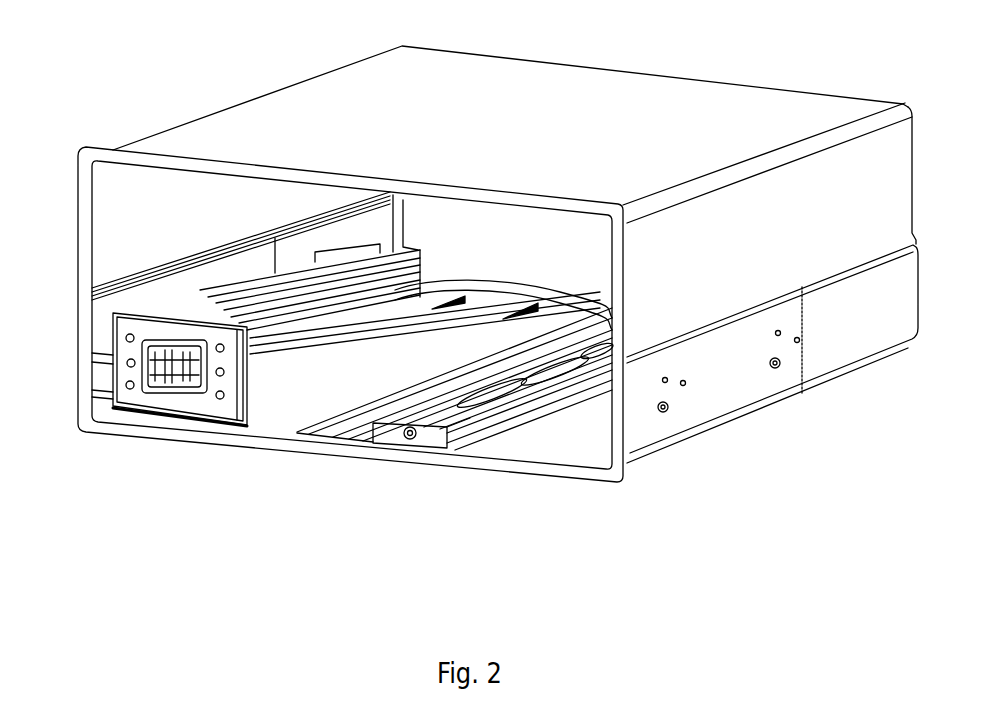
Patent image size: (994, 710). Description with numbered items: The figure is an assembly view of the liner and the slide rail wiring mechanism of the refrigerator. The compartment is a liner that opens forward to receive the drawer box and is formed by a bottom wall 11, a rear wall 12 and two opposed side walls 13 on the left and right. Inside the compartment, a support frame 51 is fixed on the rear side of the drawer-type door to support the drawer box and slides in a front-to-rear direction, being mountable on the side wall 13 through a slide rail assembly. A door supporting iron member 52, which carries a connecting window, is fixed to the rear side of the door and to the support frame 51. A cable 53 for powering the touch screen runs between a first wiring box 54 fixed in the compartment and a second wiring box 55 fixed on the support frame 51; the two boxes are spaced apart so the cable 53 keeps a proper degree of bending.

The bottom wall 11 is at (555, 452).
The rear wall 12 is at (563, 240).
The side wall 13 is at (853, 345).
The support frame 51 is at (197, 308).
The door supporting iron member 52 is at (90, 390).
The cable 53 is at (143, 390).
The first wiring box 54 is at (430, 438).
The second wiring box 55 is at (262, 357).